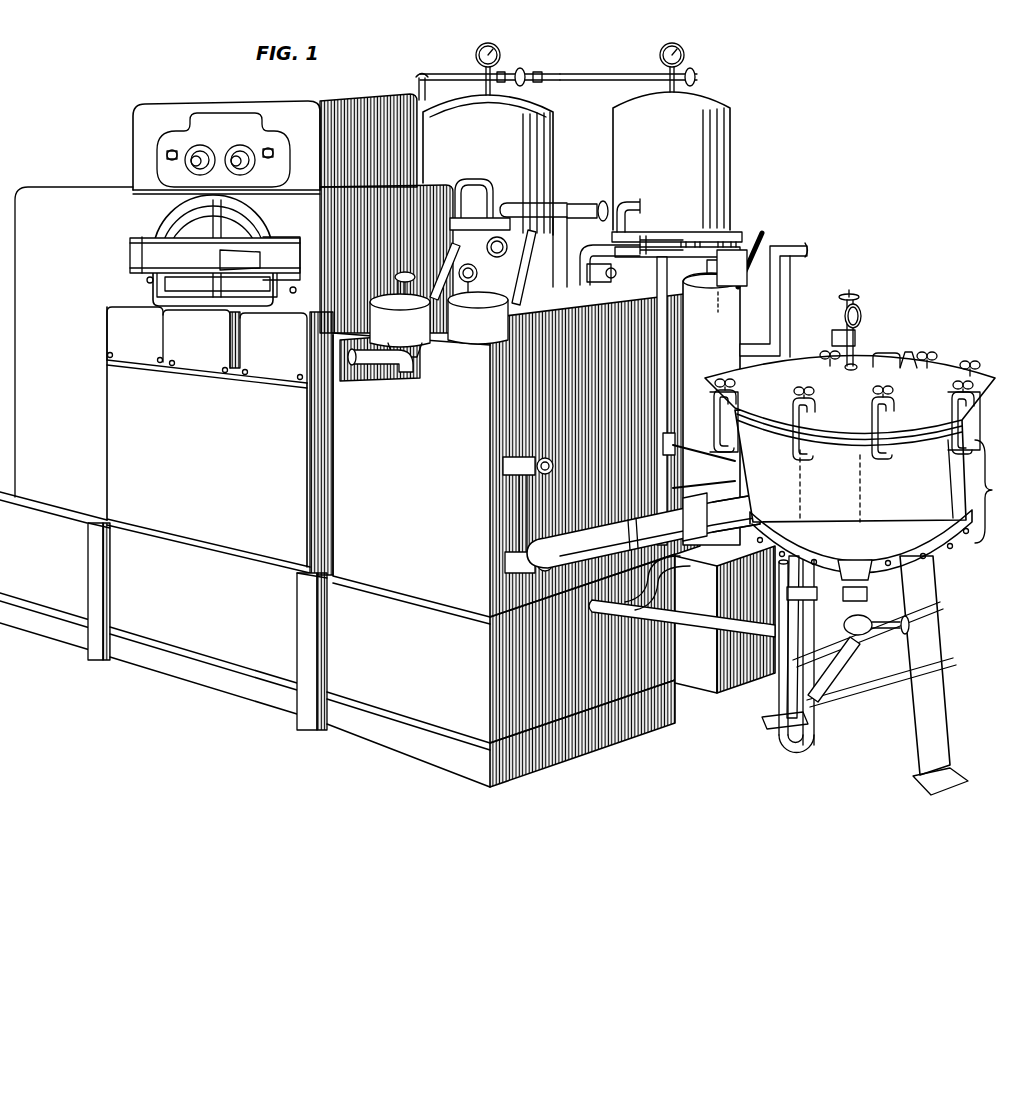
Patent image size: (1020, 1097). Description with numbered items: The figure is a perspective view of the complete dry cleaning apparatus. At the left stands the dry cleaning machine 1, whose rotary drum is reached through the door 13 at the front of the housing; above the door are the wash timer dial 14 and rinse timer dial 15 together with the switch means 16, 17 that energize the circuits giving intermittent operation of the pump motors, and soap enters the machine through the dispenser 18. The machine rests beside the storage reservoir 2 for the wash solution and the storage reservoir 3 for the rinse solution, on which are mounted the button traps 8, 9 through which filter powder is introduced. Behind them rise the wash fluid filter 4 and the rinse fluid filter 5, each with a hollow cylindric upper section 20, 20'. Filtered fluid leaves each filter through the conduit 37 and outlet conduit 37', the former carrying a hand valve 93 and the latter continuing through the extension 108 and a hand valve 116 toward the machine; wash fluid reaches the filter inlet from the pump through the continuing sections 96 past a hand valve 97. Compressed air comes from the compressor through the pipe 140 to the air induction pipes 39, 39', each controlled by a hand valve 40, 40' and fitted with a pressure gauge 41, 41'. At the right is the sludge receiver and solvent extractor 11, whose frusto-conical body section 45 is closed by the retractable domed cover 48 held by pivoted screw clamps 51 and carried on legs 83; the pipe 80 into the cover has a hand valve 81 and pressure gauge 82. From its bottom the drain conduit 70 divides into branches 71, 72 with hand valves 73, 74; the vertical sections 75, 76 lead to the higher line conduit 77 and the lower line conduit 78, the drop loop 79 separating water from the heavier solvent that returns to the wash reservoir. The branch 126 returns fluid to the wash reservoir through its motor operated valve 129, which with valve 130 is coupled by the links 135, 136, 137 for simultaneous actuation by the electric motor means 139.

The dry cleaning machine 1 is at (234, 334).
The storage reservoir for the wash solution 2 is at (175, 725).
The storage reservoir for the rinse solution 3 is at (703, 678).
The wash fluid filter 4 is at (560, 95).
The rinse fluid filter 5 is at (733, 113).
The button trap 8 is at (483, 261).
The button trap 9 is at (711, 402).
The sludge receiver and solvent extractor 11 is at (903, 617).
The door 13 is at (255, 224).
The wash timer dial 14 is at (200, 147).
The rinse timer dial 15 is at (240, 147).
The switch means 16 is at (167, 156).
The switch means 17 is at (274, 154).
The dispenser 18 is at (403, 323).
The upper section of filter body 20 is at (488, 165).
The upper section of rinse filter body 20' is at (677, 174).
The conduit 37 is at (540, 229).
The outlet conduit 37' is at (636, 202).
The pipe 39 is at (494, 65).
The air induction pipe 39' is at (628, 64).
The hand valve 40 is at (519, 65).
The hand valve 40' is at (708, 76).
The pressure gauge 41 is at (469, 69).
The pressure gauge 41' is at (694, 67).
The body section 45 is at (850, 465).
The retractable domed cover 48 is at (906, 366).
The pivoted screw clamps 51 is at (963, 363).
The drain conduit 70 is at (868, 590).
The branch conduit 71 is at (834, 675).
The branch conduit 72 is at (840, 576).
The hand valve 73 is at (861, 636).
The hand valve 74 is at (896, 627).
The vertical section 75 is at (803, 636).
The vertical section 76 is at (812, 729).
The line conduit 77 is at (779, 683).
The line conduit 78 is at (707, 612).
The drop loop 79 is at (783, 713).
The pipe 80 is at (860, 340).
The hand valve 81 is at (848, 294).
The pressure gauge 82 is at (862, 314).
The legs 83 is at (953, 640).
The hand valve 93 is at (599, 201).
The continuing sections 96 is at (578, 248).
The hand valve 97 is at (601, 283).
The extension 108 is at (633, 300).
The hand valve 116 is at (648, 239).
The branch conduit 126 is at (631, 515).
The motor operated valve 129 is at (677, 518).
The motor operated valve 130 is at (735, 513).
The link 135 is at (634, 529).
The link 136 is at (736, 482).
The link 137 is at (736, 459).
The electric motor means 139 is at (670, 433).
The pipe 140 is at (416, 96).